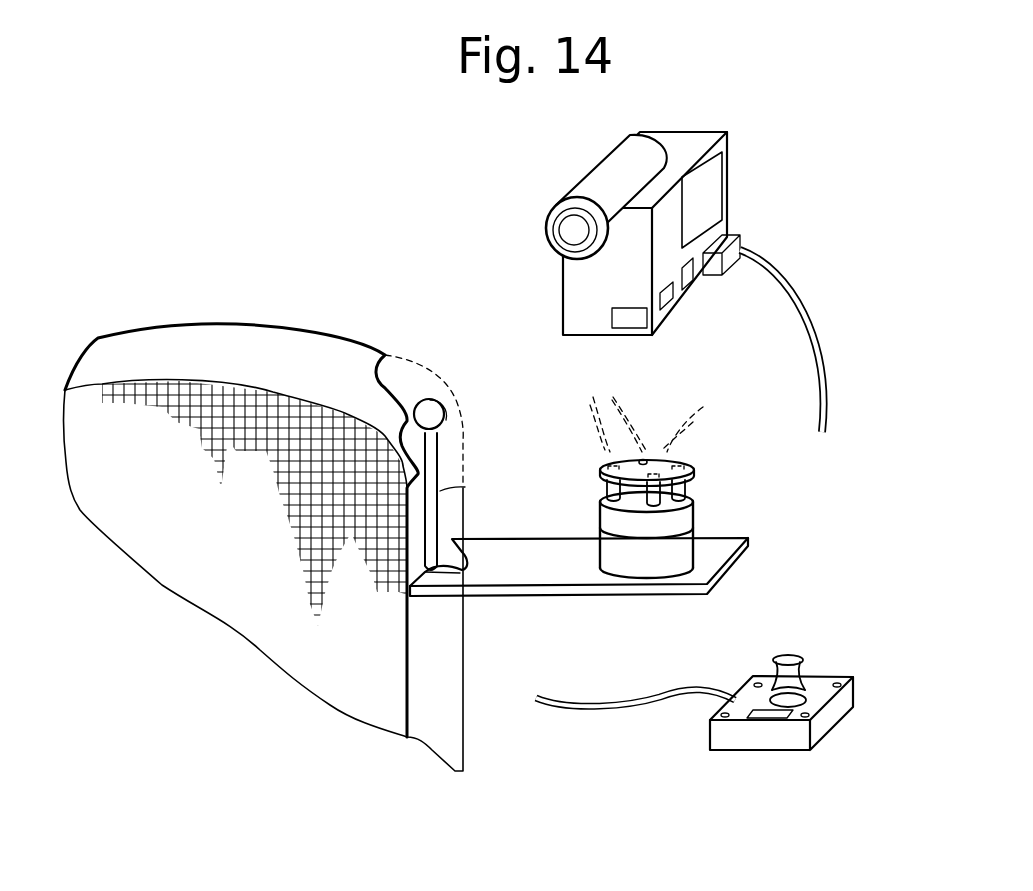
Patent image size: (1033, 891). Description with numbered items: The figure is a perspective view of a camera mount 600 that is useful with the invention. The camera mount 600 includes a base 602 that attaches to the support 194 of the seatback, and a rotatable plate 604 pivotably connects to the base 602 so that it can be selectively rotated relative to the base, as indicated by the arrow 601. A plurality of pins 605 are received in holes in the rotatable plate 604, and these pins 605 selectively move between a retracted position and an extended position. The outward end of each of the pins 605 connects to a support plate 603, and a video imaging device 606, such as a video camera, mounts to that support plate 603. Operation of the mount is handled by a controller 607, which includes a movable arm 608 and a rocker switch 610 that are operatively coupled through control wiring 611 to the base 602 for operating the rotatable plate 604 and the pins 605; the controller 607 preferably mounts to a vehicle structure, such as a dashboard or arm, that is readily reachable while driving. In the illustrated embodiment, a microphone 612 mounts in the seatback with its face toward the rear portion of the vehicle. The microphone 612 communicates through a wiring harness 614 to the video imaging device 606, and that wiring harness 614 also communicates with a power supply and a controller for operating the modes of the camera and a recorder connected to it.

The support 194 is at (500, 563).
The camera mount 600 is at (778, 530).
The arrow 601 is at (720, 513).
The base 602 is at (683, 548).
The support plate 603 is at (655, 450).
The rotatable plate 604 is at (610, 515).
The pins 605 is at (649, 422).
The video imaging device 606 is at (678, 150).
The controller 607 is at (790, 740).
The movable arm 608 is at (792, 657).
The rocker switch 610 is at (767, 713).
The control wiring 611 is at (673, 688).
The microphone 612 is at (438, 421).
The wiring harness 614 is at (810, 318).